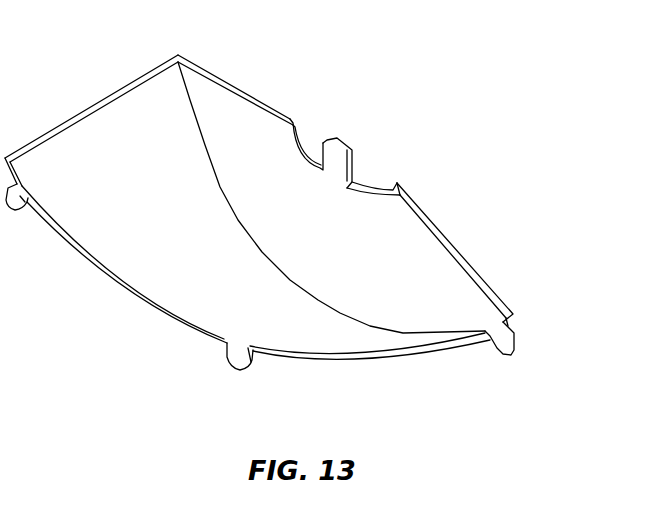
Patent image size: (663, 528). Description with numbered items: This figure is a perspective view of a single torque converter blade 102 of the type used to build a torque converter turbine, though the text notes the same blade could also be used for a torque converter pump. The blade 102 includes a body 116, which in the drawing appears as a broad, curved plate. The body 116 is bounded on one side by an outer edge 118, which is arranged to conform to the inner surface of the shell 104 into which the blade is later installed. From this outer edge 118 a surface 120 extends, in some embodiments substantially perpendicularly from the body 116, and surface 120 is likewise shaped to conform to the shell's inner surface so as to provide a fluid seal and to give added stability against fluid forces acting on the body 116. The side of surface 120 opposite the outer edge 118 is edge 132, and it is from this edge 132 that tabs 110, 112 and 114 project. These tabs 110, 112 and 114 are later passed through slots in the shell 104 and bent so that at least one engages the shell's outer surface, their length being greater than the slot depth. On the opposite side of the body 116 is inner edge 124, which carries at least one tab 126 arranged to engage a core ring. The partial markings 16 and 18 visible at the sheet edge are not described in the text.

The blade 102 is at (456, 212).
The shell 104 is at (89, 101).
The tab 110 is at (20, 207).
The tab 112 is at (237, 358).
The tab 114 is at (498, 345).
The body 116 is at (238, 117).
The outer edge 118 is at (187, 100).
The surface 120 is at (122, 137).
The inner edge 124 is at (302, 140).
The tab 126 is at (338, 163).
The edge 132 is at (330, 355).
The partially visible numeral 16 is at (12, 356).
The partially visible numeral 18 is at (12, 513).